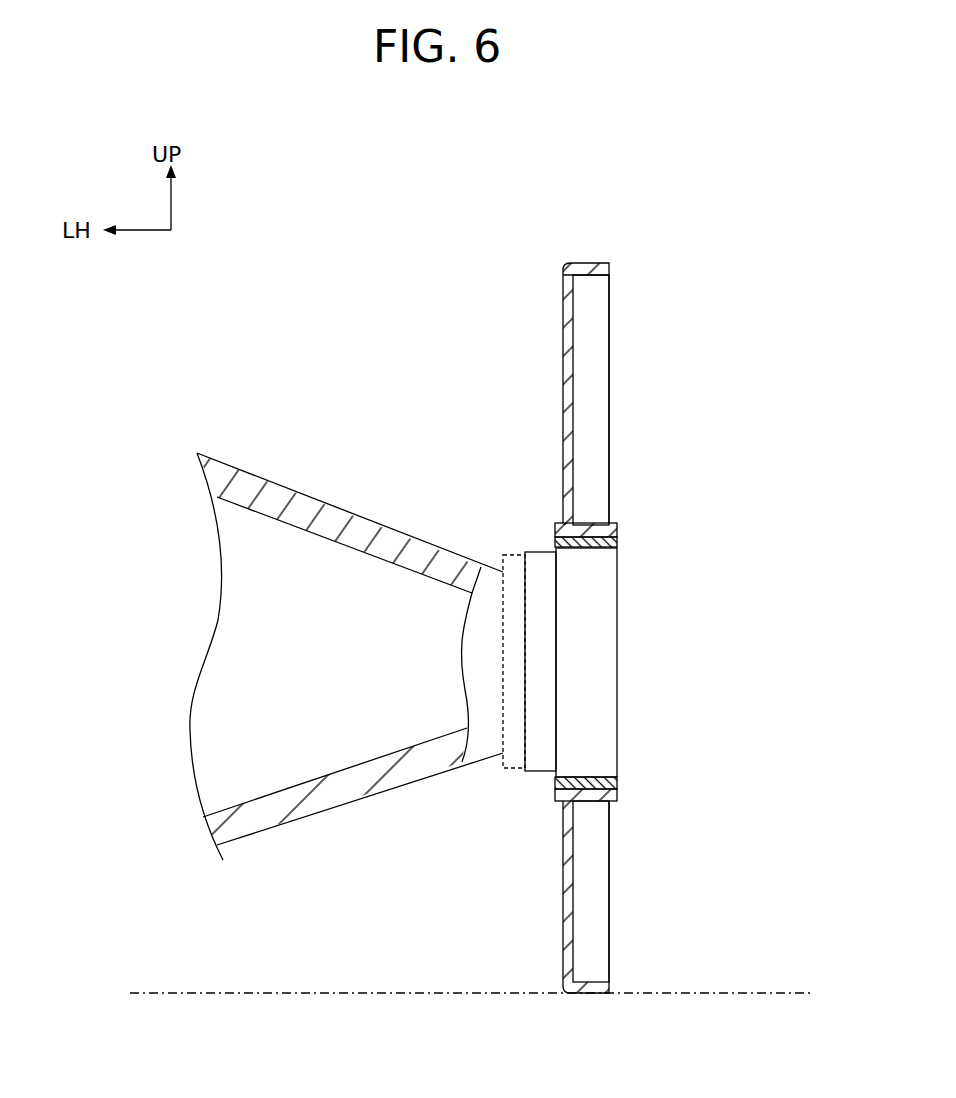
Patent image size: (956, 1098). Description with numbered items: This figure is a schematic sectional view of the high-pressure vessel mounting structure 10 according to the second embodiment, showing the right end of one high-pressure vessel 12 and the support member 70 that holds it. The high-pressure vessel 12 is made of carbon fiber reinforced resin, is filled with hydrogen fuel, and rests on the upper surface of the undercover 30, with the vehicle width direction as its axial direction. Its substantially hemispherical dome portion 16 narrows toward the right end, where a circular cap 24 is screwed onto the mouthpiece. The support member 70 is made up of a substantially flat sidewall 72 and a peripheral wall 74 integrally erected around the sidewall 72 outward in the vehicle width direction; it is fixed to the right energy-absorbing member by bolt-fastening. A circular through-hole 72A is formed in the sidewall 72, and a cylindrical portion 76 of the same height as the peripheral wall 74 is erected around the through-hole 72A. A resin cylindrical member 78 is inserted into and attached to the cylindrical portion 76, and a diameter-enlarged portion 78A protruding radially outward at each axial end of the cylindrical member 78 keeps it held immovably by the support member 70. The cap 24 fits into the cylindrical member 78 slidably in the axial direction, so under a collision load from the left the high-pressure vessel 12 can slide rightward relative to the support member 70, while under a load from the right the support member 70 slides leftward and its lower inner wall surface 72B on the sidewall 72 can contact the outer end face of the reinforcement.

The high-pressure vessel mounting structure 10 is at (430, 345).
The high-pressure vessel 12 is at (288, 488).
The dome portion 16 is at (363, 512).
The cap 24 is at (604, 660).
The undercover 30 is at (733, 993).
The support member 70 is at (610, 343).
The sidewall 72 is at (563, 407).
The peripheral wall 74 is at (593, 262).
The cylindrical portion 76 is at (587, 522).
The cylindrical member 78 is at (617, 538).
The diameter-enlarged portion 78A is at (555, 802).
The through-hole 72A is at (592, 805).
The lower inner wall surface 72B is at (563, 923).